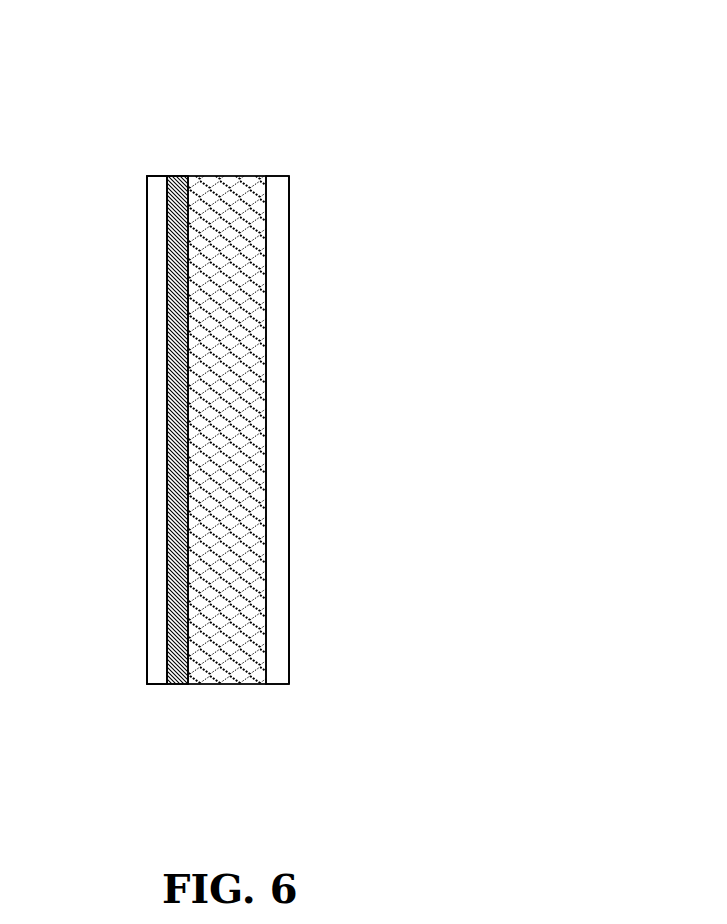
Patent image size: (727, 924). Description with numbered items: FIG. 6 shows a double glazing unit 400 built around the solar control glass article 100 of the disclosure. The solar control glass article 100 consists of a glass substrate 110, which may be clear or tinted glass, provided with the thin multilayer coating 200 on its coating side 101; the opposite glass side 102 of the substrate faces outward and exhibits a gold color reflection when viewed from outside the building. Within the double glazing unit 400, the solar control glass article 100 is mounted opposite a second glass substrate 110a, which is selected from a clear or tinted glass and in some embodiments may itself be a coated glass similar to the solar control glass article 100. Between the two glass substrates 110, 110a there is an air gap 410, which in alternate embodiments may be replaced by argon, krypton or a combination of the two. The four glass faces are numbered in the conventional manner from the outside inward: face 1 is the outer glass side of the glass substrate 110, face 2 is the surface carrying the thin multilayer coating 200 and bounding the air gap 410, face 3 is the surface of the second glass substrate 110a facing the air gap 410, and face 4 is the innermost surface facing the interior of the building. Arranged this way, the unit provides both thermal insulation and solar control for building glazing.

The double glazing unit 400 is at (216, 130).
The coating side 101 is at (168, 176).
The glass side 102 is at (147, 408).
The face 1 is at (147, 207).
The face 2 is at (163, 239).
The face 3 is at (266, 199).
The face 4 is at (289, 229).
The air gap 410 is at (233, 290).
The glass substrate 110 is at (158, 684).
The second glass substrate 110a is at (288, 684).
The solar control glass article 100 is at (187, 686).
The thin multilayer coating 200 is at (170, 684).